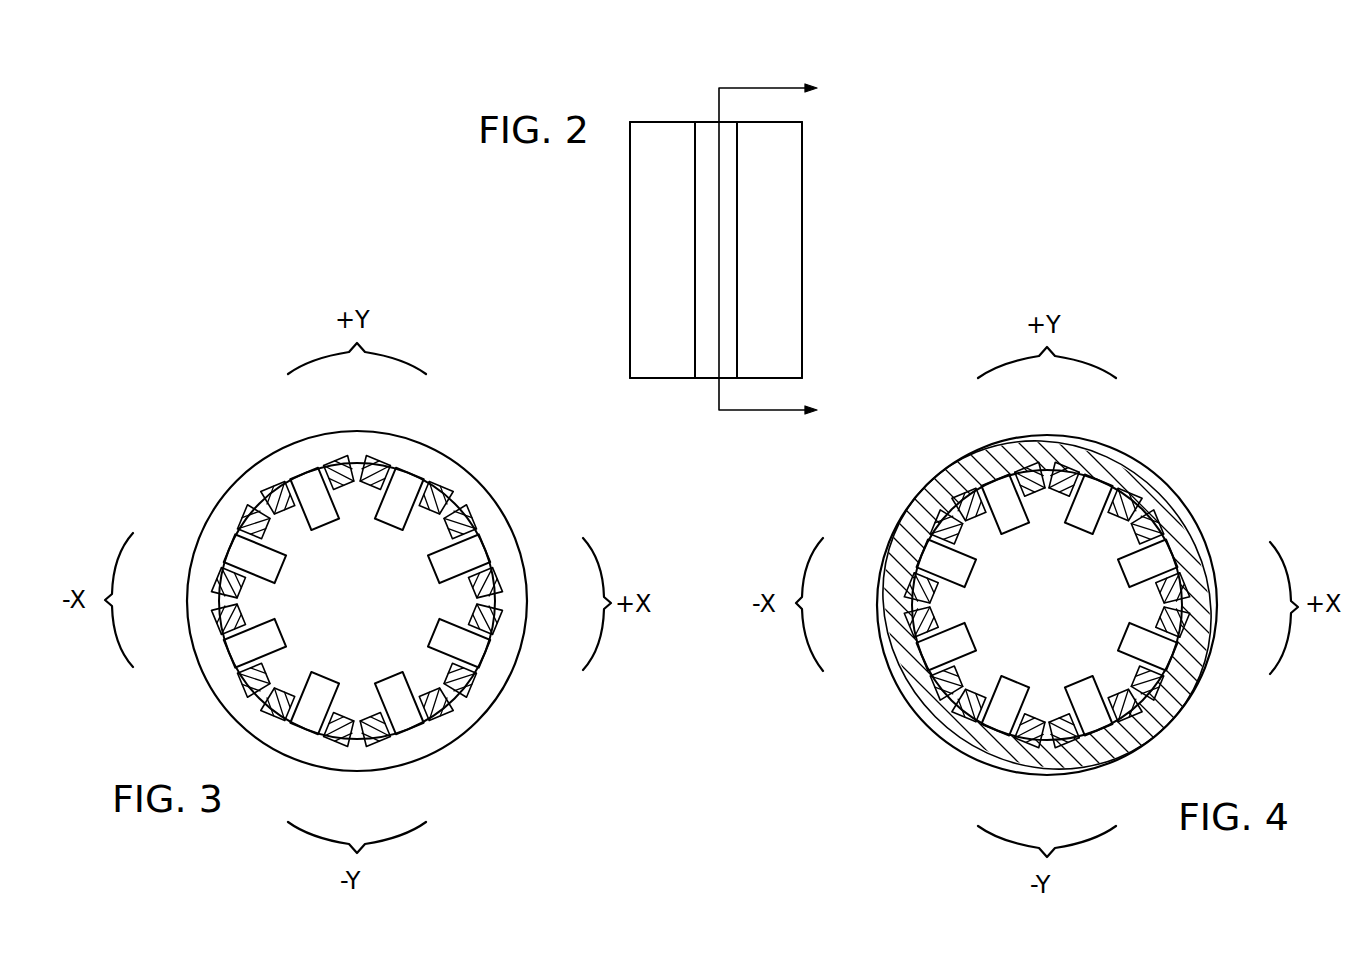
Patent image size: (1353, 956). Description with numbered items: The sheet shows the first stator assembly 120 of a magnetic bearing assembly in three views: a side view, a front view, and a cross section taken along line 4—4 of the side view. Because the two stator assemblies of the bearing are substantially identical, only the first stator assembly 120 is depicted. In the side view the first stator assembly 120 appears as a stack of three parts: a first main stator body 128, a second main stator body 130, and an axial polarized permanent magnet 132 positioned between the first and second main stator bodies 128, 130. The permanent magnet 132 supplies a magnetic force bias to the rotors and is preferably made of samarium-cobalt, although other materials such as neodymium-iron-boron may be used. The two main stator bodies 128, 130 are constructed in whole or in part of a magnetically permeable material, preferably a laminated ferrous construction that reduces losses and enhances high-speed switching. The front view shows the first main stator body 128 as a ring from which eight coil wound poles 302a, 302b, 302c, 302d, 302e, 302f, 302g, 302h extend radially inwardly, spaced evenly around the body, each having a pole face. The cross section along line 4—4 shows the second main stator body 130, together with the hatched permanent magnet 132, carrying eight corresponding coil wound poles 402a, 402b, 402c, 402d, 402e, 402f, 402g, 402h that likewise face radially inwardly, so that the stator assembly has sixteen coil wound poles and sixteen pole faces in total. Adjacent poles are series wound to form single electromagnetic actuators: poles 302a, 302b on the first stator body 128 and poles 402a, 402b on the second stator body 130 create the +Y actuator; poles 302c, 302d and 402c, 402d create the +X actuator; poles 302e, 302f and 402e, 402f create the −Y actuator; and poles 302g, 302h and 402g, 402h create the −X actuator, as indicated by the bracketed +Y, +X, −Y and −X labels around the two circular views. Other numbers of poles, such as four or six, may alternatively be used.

In FIG. 2, the first stator assembly 120 is at (657, 110).
In FIG. 2, the first main stator body 128 is at (655, 262).
In FIG. 3, the first main stator body 128 is at (476, 494).
In FIG. 2, the second main stator body 130 is at (782, 252).
In FIG. 2, the axial polarized permanent magnet 132 is at (728, 360).
In FIG. 4, the axial polarized permanent magnet 132 is at (1173, 496).
In FIG. 2, the line 4— 4 is at (777, 250).
In FIG. 3, the coil wound pole 302a is at (304, 481).
In FIG. 3, the coil wound pole 302b is at (410, 481).
In FIG. 3, the coil wound pole 302c is at (473, 548).
In FIG. 3, the coil wound pole 302d is at (472, 652).
In FIG. 3, the coil wound pole 302e is at (409, 720).
In FIG. 3, the coil wound pole 302f is at (305, 720).
In FIG. 3, the coil wound pole 302g is at (242, 650).
In FIG. 3, the coil wound pole 302h is at (238, 547).
In FIG. 4, the coil wound pole 402a is at (995, 486).
In FIG. 4, the coil wound pole 402b is at (1100, 486).
In FIG. 4, the coil wound pole 402c is at (1163, 552).
In FIG. 4, the coil wound pole 402d is at (1161, 656).
In FIG. 4, the coil wound pole 402e is at (1099, 726).
In FIG. 4, the coil wound pole 402f is at (995, 726).
In FIG. 4, the coil wound pole 402g is at (935, 656).
In FIG. 4, the coil wound pole 402h is at (931, 552).